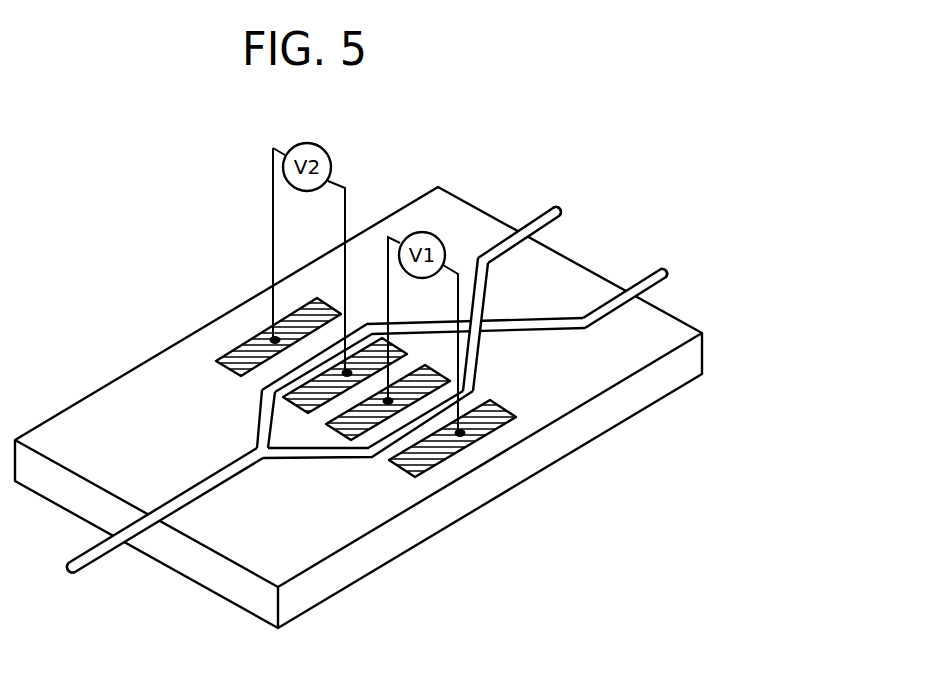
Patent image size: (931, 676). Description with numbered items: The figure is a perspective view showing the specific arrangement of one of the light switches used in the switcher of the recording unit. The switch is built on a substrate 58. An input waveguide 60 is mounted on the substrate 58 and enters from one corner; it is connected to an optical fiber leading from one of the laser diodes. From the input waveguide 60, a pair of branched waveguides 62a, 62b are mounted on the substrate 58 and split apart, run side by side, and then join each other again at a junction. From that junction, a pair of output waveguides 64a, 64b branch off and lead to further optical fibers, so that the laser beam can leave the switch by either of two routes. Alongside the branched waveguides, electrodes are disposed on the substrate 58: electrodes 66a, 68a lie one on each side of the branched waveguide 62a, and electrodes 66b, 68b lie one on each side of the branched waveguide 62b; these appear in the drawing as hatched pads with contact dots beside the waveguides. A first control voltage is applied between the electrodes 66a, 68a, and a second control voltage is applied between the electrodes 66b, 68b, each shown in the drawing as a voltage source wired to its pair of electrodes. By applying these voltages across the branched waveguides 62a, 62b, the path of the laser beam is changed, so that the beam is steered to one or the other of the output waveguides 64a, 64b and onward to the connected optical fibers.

The substrate 58 is at (78, 435).
The input waveguide 60 is at (192, 493).
The branched waveguide 62a is at (477, 353).
The branched waveguide 62b is at (428, 322).
The output waveguide 64a is at (600, 300).
The output waveguide 64b is at (496, 246).
The electrode 66a is at (346, 432).
The electrode 66b is at (263, 423).
The electrode 68a is at (473, 436).
The electrode 68b is at (238, 360).